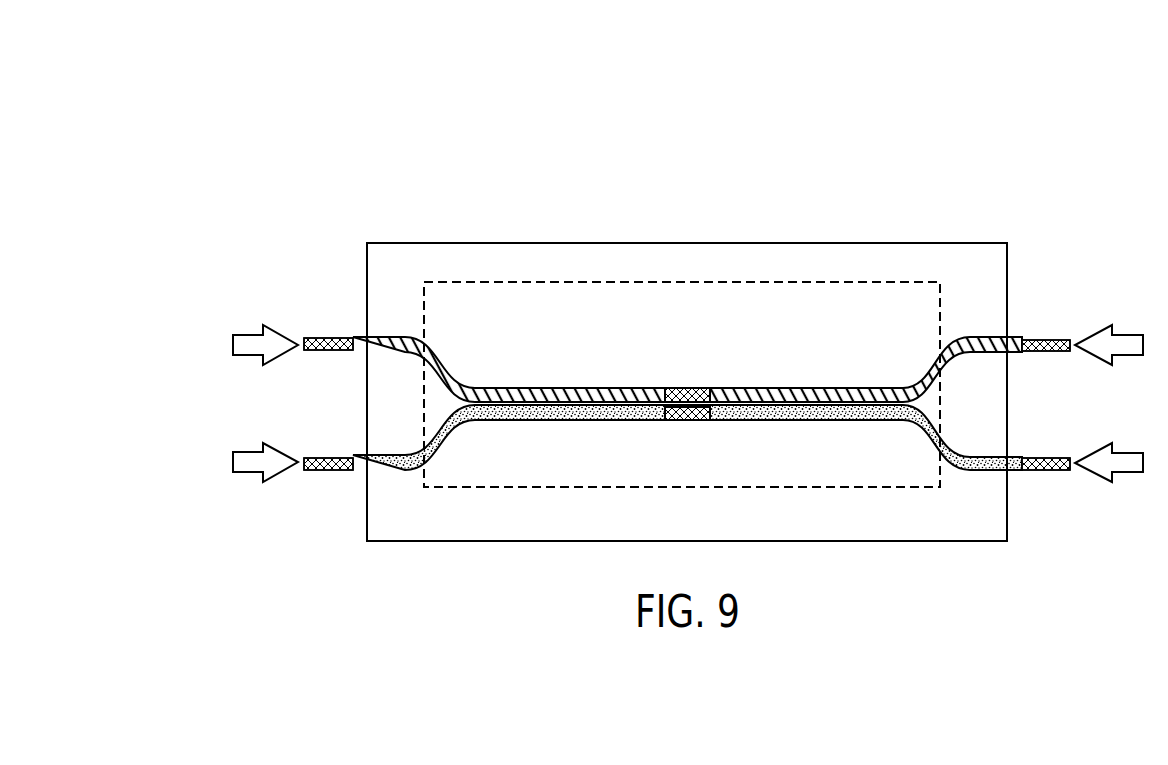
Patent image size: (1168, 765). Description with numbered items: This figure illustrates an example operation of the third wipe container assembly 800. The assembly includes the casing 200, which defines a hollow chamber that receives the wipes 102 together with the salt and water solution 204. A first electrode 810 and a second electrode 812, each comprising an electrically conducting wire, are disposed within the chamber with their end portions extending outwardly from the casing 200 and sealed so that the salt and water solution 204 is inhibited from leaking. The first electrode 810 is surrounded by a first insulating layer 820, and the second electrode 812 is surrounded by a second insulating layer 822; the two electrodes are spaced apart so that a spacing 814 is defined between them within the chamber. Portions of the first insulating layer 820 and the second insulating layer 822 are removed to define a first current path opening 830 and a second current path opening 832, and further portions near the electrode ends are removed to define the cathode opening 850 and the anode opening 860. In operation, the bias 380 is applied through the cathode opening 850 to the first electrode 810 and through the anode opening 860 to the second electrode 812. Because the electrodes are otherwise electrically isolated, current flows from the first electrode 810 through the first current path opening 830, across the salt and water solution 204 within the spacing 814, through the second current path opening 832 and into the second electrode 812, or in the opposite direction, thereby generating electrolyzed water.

The third wipe container assembly 800 is at (332, 148).
The casing 200 is at (612, 243).
The salt and water solution 204 is at (967, 252).
The wipes 102 is at (660, 282).
The bias 380 is at (257, 331).
The cathode opening 850 is at (328, 338).
The anode opening 860 is at (328, 458).
The first insulating layer 820 is at (570, 388).
The second insulating layer 822 is at (578, 420).
The first electrode 810 is at (676, 388).
The second electrode 812 is at (672, 420).
The spacing 814 is at (688, 402).
The first current path opening 830 is at (705, 388).
The second current path opening 832 is at (700, 420).